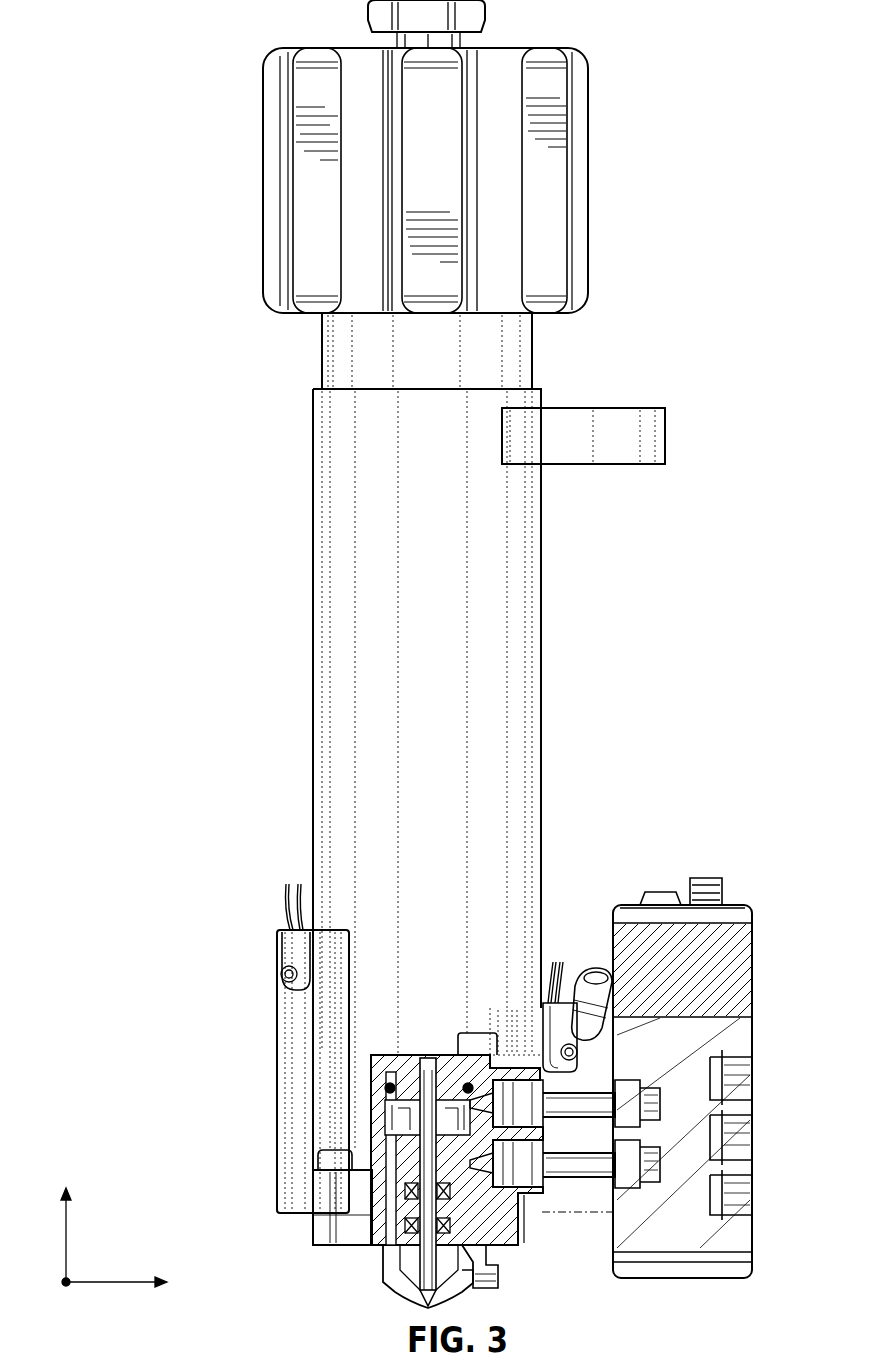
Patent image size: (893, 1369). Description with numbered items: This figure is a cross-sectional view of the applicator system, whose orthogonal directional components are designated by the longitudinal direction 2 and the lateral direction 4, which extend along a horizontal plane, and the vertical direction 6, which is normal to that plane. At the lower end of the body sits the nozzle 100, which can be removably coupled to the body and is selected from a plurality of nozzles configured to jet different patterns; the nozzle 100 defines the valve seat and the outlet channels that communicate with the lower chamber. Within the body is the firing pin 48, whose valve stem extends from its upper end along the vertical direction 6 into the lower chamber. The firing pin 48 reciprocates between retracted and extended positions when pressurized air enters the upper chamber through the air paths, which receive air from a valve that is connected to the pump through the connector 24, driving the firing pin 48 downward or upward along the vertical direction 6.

The longitudinal direction 2 is at (57, 1291).
The lateral direction 4 is at (116, 1294).
The vertical direction 6 is at (58, 1235).
The connector 24 is at (600, 1197).
The firing pin 48 is at (430, 1278).
The nozzle 100 is at (480, 1282).